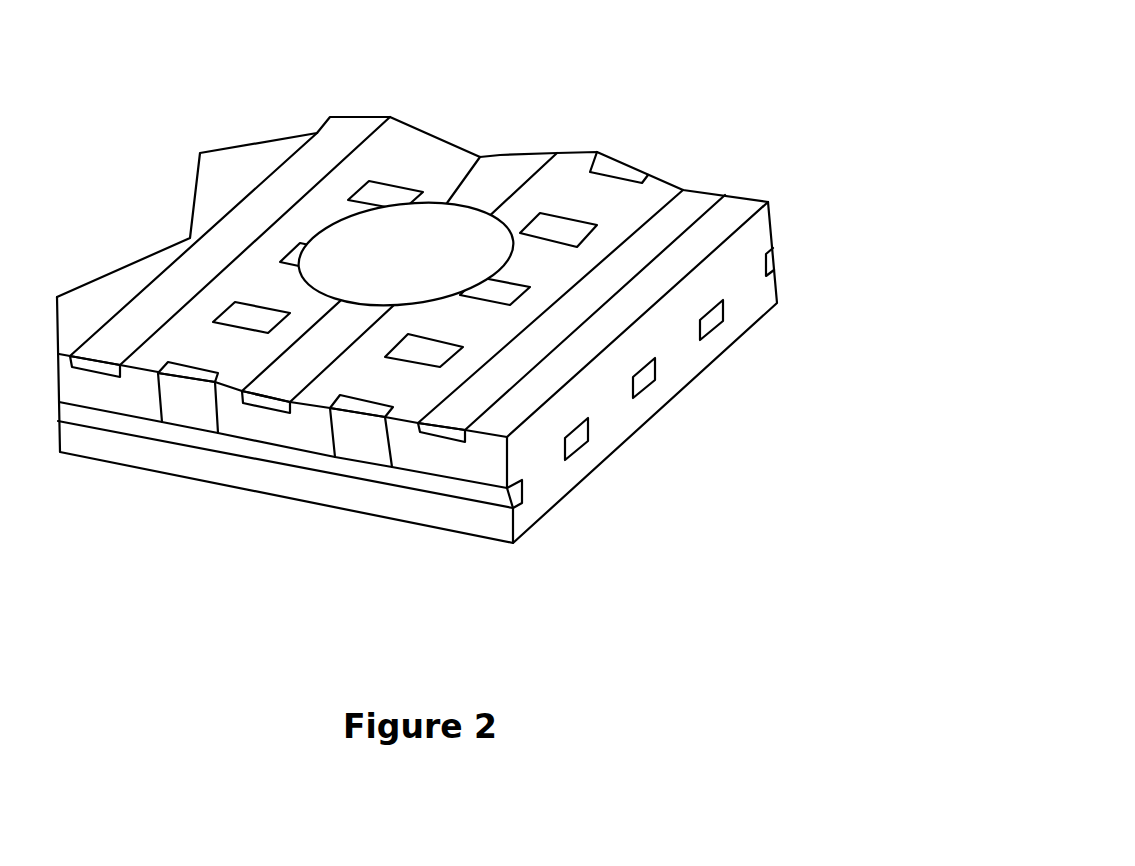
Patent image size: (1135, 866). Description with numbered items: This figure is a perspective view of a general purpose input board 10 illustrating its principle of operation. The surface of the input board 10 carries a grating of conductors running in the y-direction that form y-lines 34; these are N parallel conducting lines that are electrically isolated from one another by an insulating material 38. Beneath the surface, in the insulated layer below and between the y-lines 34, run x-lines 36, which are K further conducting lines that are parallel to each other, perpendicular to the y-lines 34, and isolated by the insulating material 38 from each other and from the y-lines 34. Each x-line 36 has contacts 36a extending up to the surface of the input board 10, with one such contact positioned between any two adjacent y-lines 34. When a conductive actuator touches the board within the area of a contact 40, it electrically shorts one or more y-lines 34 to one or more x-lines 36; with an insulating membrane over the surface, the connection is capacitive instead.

The general purpose input board 10 is at (693, 505).
The y-lines 34 is at (683, 210).
The x-lines 36 is at (360, 458).
The contacts 36a is at (608, 168).
The insulating material 38 is at (243, 412).
The area of a contact 40 is at (471, 228).